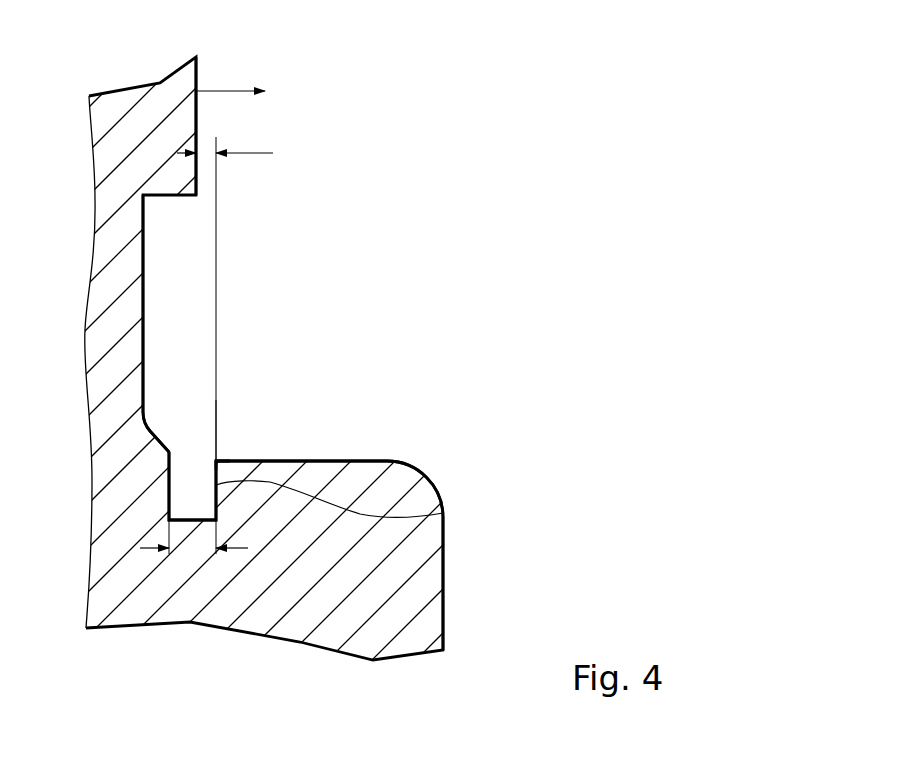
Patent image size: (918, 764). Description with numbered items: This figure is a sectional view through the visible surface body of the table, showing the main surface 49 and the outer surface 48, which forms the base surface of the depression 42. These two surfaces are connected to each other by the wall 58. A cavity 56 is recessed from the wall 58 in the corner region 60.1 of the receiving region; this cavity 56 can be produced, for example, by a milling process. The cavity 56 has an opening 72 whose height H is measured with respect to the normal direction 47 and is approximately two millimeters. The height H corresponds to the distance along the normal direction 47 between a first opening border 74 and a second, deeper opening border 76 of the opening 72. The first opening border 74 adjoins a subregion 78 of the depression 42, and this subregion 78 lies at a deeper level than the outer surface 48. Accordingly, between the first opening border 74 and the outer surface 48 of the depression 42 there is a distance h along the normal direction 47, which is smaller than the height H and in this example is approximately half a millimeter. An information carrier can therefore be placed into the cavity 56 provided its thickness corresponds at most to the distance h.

The depression 42 is at (275, 210).
The normal direction 47 is at (243, 89).
The outer surface 48 is at (198, 117).
The distance h is at (273, 153).
The subregion 78 is at (143, 253).
The second, deeper opening border 76 is at (170, 452).
The opening 72 is at (203, 448).
The corner region 60.1 is at (265, 422).
The first opening border 74 is at (216, 458).
The wall 58 is at (343, 461).
The cavity 56 is at (443, 514).
The main surface 49 is at (443, 557).
The height H is at (228, 552).